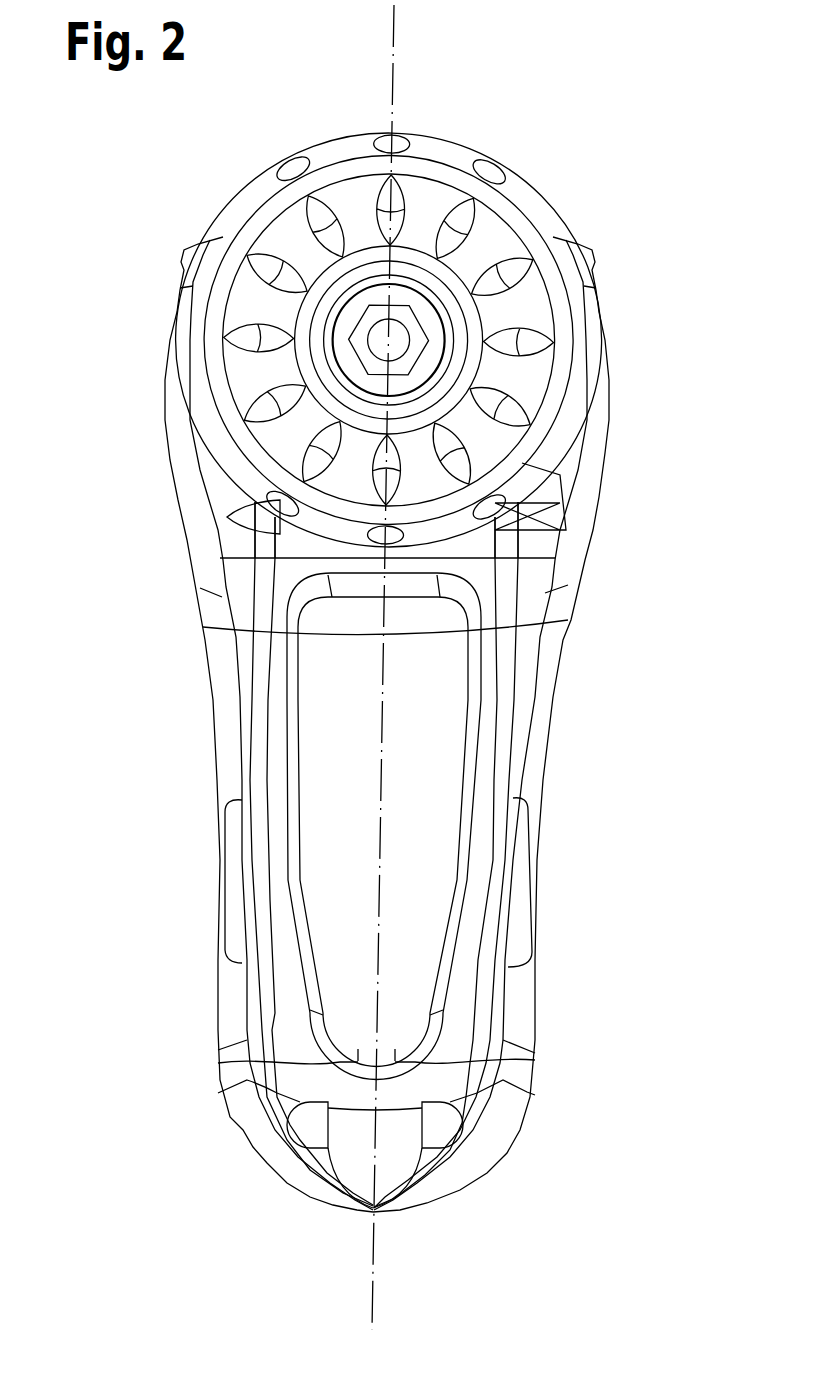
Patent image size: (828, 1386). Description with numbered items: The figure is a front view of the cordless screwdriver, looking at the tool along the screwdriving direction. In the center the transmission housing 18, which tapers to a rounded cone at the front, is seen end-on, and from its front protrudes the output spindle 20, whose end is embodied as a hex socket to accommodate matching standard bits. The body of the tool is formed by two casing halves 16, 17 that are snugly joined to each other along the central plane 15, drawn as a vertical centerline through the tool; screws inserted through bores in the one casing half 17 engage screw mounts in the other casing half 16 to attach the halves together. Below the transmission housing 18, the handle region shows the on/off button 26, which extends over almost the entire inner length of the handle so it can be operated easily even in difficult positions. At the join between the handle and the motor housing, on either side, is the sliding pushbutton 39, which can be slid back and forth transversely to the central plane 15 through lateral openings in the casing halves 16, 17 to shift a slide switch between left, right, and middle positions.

The central plane 15 is at (392, 21).
The casing half 16 is at (413, 1075).
The casing half 17 is at (337, 1077).
The transmission housing 18 is at (433, 150).
The output spindle 20 is at (403, 300).
The on/off button 26 is at (430, 770).
The sliding pushbutton 39 is at (257, 520).